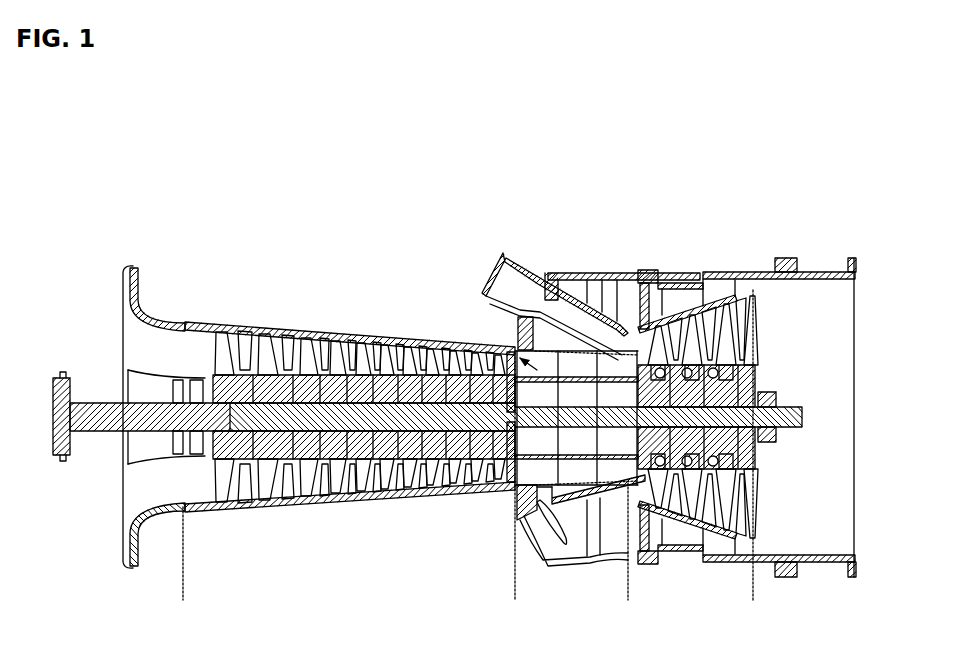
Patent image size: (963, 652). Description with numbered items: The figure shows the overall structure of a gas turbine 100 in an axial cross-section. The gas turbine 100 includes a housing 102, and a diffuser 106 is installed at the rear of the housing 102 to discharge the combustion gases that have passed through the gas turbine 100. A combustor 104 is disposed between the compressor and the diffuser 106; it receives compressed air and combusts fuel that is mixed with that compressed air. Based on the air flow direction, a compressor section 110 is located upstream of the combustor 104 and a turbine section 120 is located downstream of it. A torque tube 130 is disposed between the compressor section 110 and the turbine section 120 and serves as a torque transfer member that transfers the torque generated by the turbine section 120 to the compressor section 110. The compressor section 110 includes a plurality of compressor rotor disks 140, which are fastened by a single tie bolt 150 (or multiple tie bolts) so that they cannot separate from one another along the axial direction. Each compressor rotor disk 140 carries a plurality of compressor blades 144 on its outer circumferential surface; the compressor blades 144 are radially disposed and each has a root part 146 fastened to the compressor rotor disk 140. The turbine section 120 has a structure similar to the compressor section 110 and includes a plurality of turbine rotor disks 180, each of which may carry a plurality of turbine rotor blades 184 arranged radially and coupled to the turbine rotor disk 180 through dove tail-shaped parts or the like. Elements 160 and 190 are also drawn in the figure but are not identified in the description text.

The gas turbine 100 is at (815, 131).
The housing 102 is at (366, 314).
The combustor 104 is at (512, 247).
The diffuser 106 is at (820, 256).
The compressor section 110 is at (515, 597).
The turbine section 120 is at (753, 597).
The torque tube 130 is at (500, 343).
The compressor rotor disk 140 is at (262, 355).
The compressor blade 144 is at (272, 350).
The root part 146 is at (283, 356).
The tie bolt 150 is at (182, 432).
The turbine 160 is at (660, 270).
The turbine rotor disk 180 is at (747, 345).
The turbine rotor blade 184 is at (687, 330).
The turbine rotor disk 190 is at (765, 397).